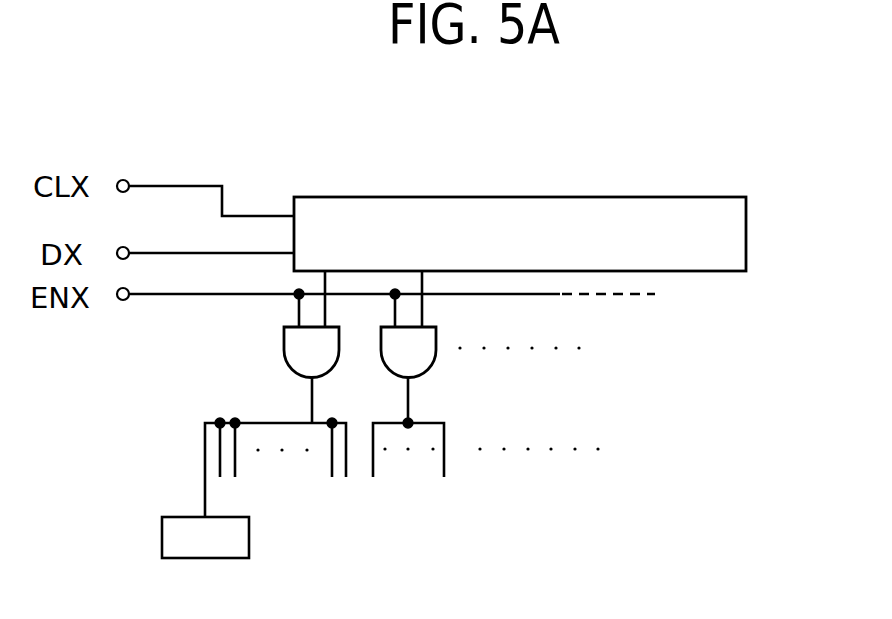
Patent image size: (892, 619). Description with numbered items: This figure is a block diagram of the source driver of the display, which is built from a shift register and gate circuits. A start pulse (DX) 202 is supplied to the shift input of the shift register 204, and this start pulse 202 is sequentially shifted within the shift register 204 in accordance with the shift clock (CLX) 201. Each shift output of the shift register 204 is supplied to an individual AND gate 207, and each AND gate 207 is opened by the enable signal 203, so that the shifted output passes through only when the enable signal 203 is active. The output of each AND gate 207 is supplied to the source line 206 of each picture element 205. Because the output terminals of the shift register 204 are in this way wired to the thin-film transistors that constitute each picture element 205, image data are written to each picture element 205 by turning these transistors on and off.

The shift clock (CLX) 201 is at (128, 181).
The start pulse (DX) 202 is at (126, 247).
The enable signal 203 is at (124, 301).
The shift register 204 is at (687, 197).
The picture element 205 is at (249, 530).
The source line 206 is at (204, 468).
The AND gate 207 is at (286, 352).